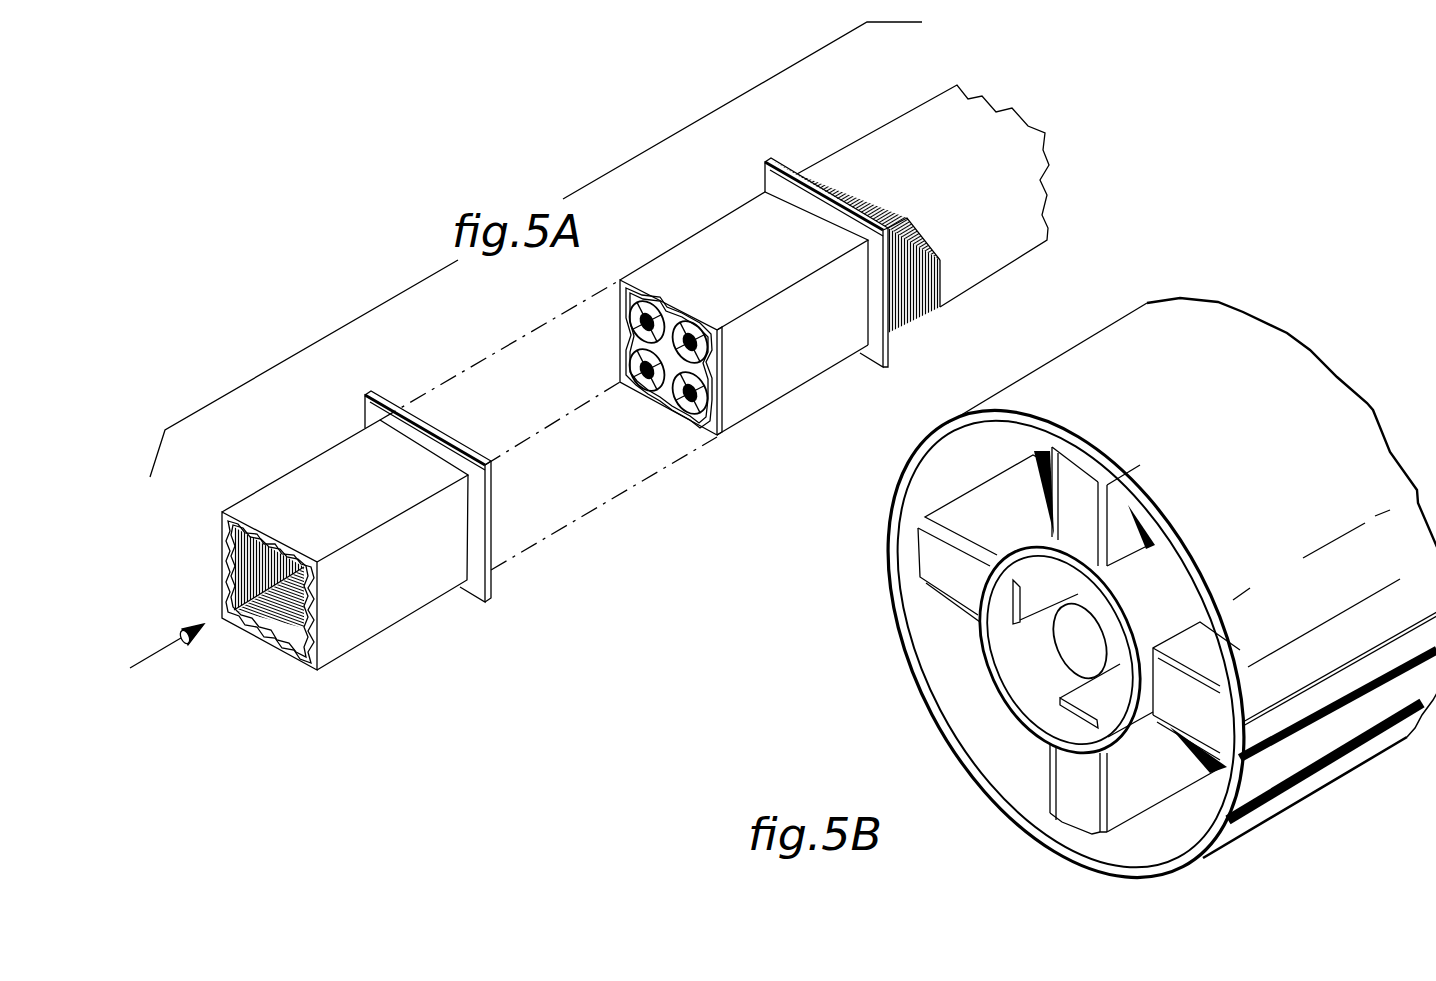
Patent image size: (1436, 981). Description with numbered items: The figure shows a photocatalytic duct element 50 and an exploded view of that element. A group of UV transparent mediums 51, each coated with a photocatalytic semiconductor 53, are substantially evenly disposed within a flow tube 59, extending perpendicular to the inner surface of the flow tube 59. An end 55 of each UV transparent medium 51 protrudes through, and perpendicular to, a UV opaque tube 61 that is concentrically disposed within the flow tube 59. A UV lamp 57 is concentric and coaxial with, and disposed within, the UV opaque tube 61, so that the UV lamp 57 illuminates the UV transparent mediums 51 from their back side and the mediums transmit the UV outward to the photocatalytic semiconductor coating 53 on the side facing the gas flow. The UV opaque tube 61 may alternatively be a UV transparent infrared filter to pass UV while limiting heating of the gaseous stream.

In FIG. 5A, the flame arrestor / honeycomb insert 50 is at (618, 357).
In FIG. 5B, the UV transparent mediums 51 is at (1073, 487).
In FIG. 5B, the photocatalytic semiconductor coating 53 is at (1105, 793).
In FIG. 5B, the end of the UV transparent mediums 55 is at (1085, 702).
In FIG. 5B, the UV lamp 57 is at (1092, 637).
In FIG. 5B, the flow tube 59 is at (913, 662).
In FIG. 5B, the UV opaque tube 61 is at (1001, 675).